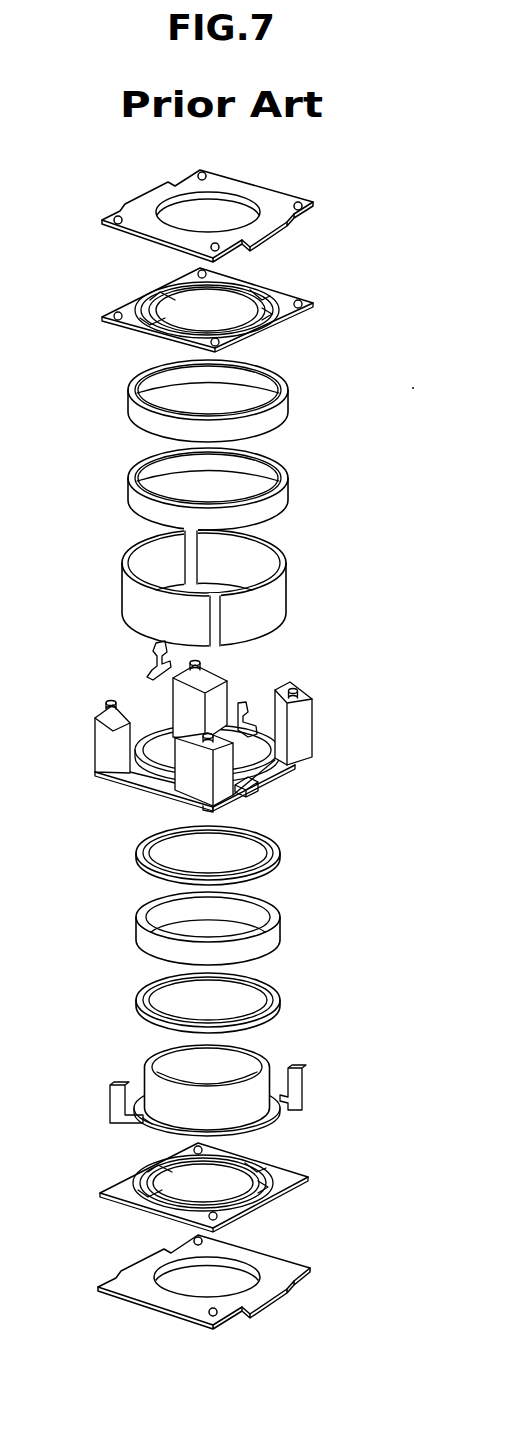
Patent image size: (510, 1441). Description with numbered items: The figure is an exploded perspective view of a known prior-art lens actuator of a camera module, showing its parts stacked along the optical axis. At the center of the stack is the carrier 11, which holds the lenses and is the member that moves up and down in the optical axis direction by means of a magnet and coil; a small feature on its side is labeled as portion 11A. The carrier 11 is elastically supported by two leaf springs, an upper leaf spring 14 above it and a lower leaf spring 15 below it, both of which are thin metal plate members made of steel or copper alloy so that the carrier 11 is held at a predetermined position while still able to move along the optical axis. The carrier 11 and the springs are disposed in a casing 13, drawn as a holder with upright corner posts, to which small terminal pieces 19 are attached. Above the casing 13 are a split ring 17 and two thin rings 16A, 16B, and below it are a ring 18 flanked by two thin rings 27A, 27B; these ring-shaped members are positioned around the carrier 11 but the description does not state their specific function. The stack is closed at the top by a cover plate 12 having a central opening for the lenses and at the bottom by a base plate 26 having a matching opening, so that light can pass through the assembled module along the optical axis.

The upper cover plate 12 is at (313, 202).
The upper leaf spring 14 is at (313, 302).
The upper spacer ring 16A is at (288, 396).
The upper spacer ring 16B is at (288, 484).
The split ring yoke 17 is at (275, 597).
The casing 13 is at (303, 733).
The terminal 19 is at (198, 723).
The lower spacer ring 27A is at (280, 853).
The magnet ring 18 is at (280, 937).
The lower spacer ring 27B is at (280, 1005).
The carrier 11 is at (255, 1098).
The carrier projection 11A is at (155, 1123).
The lower leaf spring 15 is at (277, 1175).
The base plate 26 is at (278, 1263).